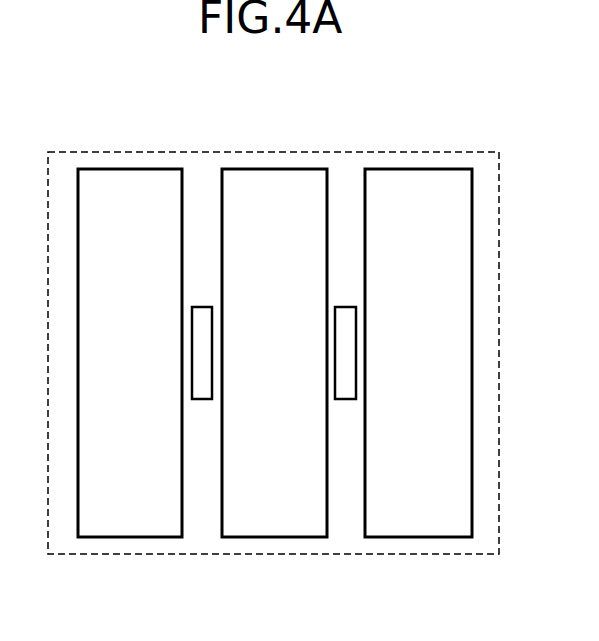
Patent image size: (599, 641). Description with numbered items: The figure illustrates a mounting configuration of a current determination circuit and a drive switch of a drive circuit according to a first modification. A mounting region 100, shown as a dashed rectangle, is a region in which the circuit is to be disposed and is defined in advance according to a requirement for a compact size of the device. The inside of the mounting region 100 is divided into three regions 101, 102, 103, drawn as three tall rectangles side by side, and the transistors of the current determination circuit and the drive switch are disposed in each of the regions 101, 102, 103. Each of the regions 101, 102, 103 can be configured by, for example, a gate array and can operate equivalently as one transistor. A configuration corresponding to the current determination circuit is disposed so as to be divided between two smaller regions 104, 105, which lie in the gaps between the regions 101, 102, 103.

The mounting region 100 is at (459, 152).
The region 101 is at (129, 523).
The region 102 is at (275, 523).
The region 103 is at (423, 523).
The region 104 is at (204, 316).
The region 105 is at (349, 316).